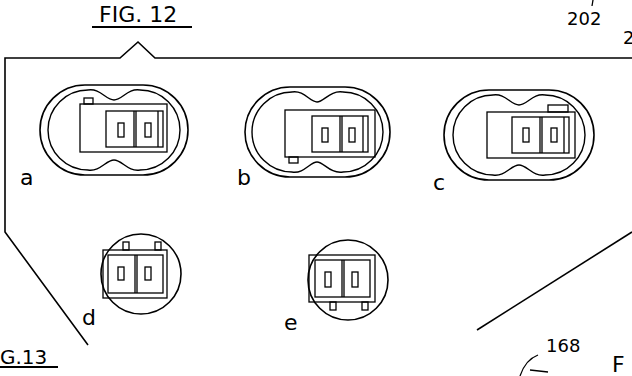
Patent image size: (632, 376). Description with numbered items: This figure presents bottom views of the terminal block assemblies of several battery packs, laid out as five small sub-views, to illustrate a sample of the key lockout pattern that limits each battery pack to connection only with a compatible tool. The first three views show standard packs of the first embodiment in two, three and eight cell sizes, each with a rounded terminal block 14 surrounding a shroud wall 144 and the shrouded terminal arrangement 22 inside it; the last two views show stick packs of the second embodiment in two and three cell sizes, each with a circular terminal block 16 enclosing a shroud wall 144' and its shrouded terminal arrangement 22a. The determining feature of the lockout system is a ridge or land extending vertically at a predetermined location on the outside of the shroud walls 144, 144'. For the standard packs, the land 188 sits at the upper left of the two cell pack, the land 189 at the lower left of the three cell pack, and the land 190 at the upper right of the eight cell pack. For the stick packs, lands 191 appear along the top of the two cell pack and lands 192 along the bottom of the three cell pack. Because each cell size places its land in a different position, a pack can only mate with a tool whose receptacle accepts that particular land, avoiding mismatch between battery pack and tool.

The receptacle casing 14 is at (577, 175).
The receptacle insert 16 is at (394, 287).
The plug receptacle face 22 is at (140, 131).
The plug receptacle face 22a is at (140, 283).
The shroud wall 144 is at (138, 114).
The shroud wall 144' is at (173, 274).
The land 188 is at (89, 98).
The land 189 is at (293, 163).
The land 190 is at (560, 105).
The land 191 is at (158, 242).
The land 192 is at (365, 310).